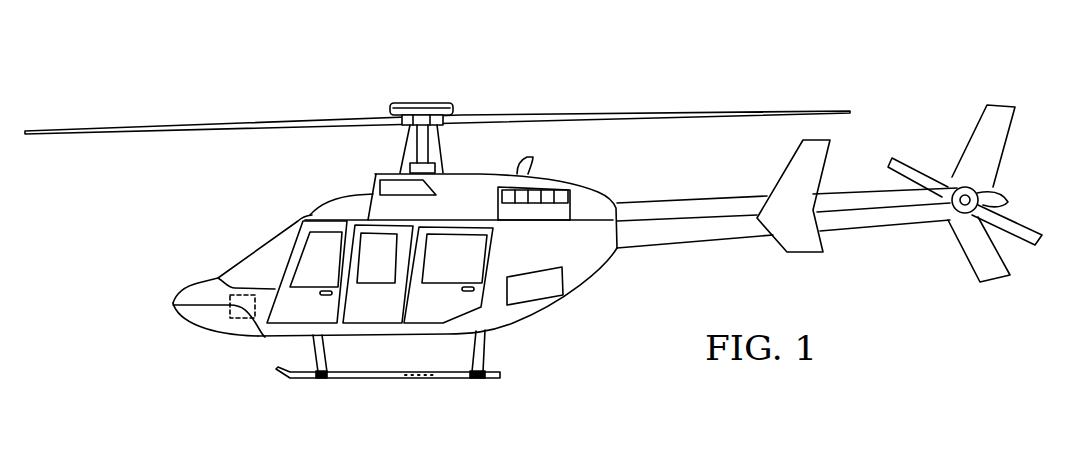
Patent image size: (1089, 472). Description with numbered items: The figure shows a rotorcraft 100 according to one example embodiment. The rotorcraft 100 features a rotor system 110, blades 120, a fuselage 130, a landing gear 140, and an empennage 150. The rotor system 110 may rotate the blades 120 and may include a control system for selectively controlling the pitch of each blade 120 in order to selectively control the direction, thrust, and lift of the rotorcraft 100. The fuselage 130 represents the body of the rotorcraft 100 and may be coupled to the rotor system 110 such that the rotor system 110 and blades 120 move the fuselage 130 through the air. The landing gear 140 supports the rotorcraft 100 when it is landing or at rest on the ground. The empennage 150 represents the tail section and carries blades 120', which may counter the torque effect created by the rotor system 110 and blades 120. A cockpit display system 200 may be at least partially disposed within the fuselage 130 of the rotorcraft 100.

The rotorcraft 100 is at (212, 81).
The rotor system 110 is at (423, 103).
The blades 120 is at (437, 92).
The blades 120' is at (981, 193).
The fuselage 130 is at (198, 328).
The landing gear 140 is at (385, 380).
The empennage 150 is at (697, 246).
The cockpit display system 200 is at (235, 320).